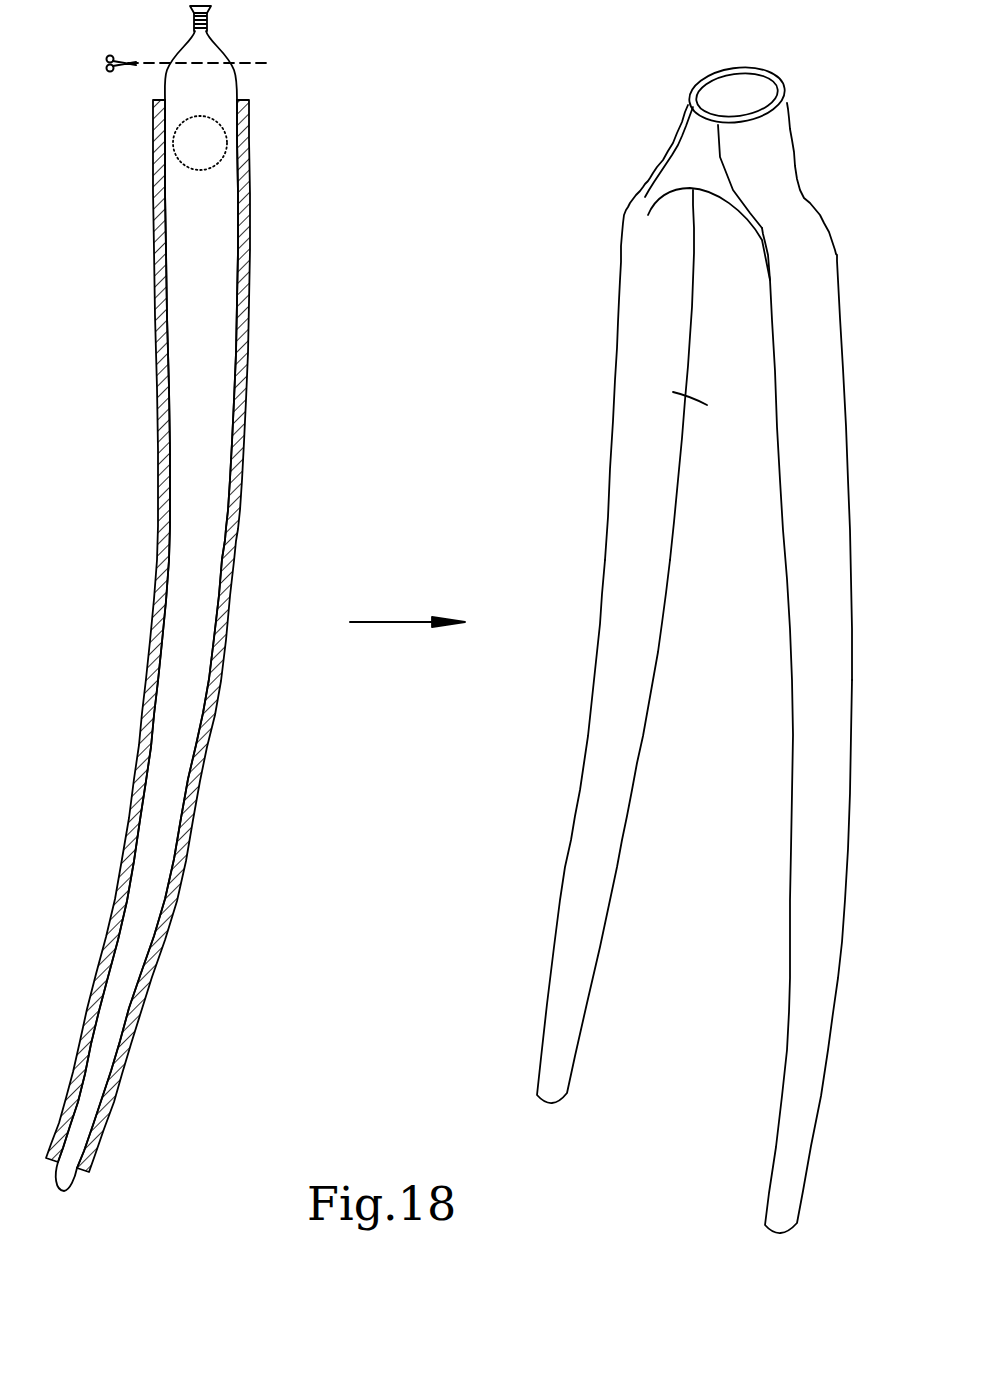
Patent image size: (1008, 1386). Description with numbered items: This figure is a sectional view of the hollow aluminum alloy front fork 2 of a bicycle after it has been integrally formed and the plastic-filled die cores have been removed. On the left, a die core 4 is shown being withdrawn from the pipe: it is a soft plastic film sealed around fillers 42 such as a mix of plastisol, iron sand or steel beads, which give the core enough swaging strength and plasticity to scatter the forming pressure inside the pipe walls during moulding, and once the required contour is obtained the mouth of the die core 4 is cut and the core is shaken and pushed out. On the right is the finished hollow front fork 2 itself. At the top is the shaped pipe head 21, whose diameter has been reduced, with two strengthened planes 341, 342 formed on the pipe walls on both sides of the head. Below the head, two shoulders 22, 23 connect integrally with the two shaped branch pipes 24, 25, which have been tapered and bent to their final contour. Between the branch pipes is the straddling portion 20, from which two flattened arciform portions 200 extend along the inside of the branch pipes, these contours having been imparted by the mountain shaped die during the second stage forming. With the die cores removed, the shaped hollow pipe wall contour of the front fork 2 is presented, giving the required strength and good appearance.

The front fork 2 is at (268, 391).
The die core 4 is at (207, 318).
The fillers 42 is at (219, 159).
The straddling portion 20 is at (710, 197).
The shaped pipe head 21 is at (705, 76).
The shoulder 22 is at (640, 182).
The shoulder 23 is at (792, 220).
The shaped branch pipe 24 is at (150, 700).
The shaped branch pipe 25 is at (833, 787).
The flattened arciform portion 200 is at (721, 410).
The plane 341 is at (698, 150).
The plane 342 is at (778, 73).